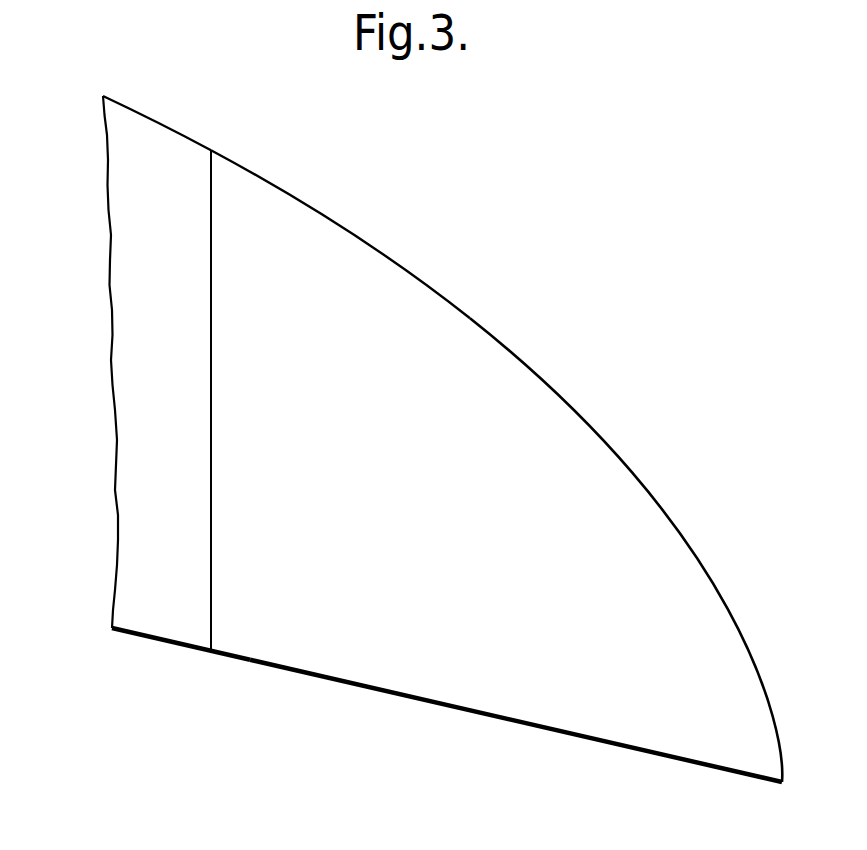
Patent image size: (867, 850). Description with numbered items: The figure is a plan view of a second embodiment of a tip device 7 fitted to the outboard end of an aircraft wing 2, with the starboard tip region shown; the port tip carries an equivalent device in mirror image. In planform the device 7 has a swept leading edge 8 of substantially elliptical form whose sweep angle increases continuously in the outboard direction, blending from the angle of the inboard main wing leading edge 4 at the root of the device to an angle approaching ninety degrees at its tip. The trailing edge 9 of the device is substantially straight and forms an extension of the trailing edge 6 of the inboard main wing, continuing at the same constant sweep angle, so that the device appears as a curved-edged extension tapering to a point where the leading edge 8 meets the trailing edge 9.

The wing 2 is at (97, 103).
The inboard main wing leading edge 4 is at (171, 128).
The trailing edge of the inboard main wing 6 is at (153, 640).
The tip device 7 is at (553, 368).
The swept leading edge 8 is at (381, 252).
The trailing edge 9 is at (447, 708).